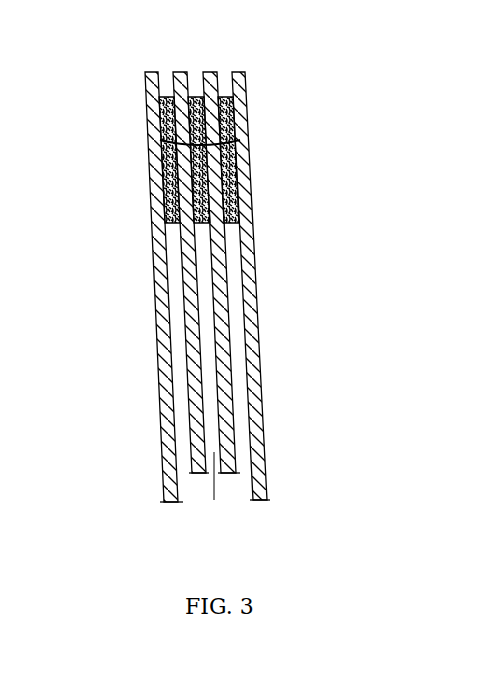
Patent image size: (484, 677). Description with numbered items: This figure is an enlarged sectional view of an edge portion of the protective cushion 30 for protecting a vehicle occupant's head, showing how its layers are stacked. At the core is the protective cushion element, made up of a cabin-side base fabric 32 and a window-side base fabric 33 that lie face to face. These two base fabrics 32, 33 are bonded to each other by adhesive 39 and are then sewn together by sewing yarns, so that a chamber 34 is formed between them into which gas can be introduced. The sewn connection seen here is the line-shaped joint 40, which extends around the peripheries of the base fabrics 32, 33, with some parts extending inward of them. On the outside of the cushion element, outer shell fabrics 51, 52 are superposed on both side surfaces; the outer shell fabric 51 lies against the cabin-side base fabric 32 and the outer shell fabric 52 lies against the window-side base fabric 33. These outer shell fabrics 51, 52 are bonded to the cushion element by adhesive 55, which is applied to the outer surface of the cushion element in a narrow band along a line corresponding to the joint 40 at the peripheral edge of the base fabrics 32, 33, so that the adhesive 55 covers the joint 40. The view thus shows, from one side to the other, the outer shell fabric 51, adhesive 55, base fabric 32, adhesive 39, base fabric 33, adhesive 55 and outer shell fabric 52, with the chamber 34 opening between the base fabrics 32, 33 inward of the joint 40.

The protective cushion 30 is at (187, 276).
The cabin-side base fabric 32 is at (204, 474).
The window-side base fabric 33 is at (225, 475).
The chamber 34 is at (232, 516).
The adhesive 39 is at (198, 97).
The line-shaped joint 40 is at (252, 142).
The outer shell fabric 51 is at (157, 312).
The outer shell fabric 52 is at (258, 303).
The adhesive 55 is at (165, 97).